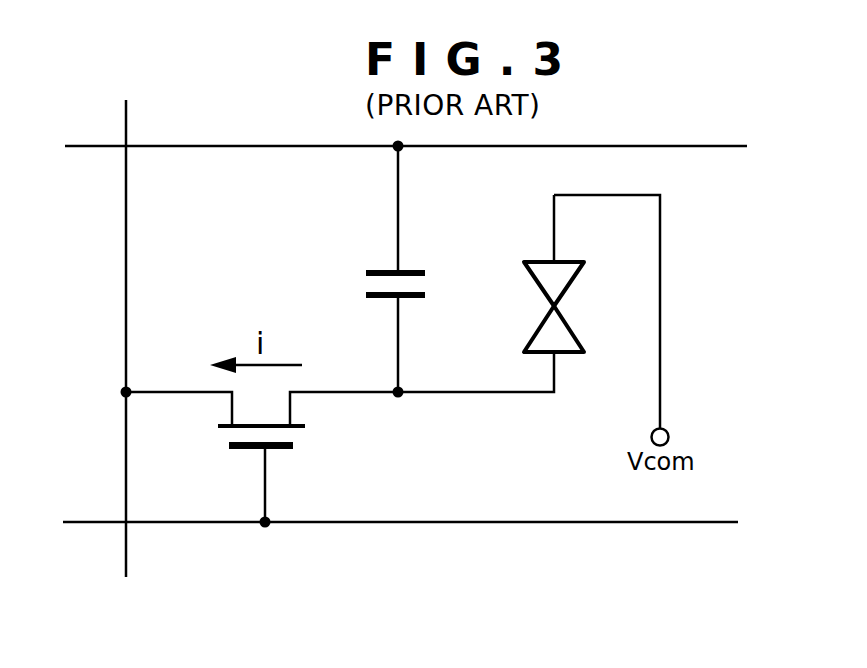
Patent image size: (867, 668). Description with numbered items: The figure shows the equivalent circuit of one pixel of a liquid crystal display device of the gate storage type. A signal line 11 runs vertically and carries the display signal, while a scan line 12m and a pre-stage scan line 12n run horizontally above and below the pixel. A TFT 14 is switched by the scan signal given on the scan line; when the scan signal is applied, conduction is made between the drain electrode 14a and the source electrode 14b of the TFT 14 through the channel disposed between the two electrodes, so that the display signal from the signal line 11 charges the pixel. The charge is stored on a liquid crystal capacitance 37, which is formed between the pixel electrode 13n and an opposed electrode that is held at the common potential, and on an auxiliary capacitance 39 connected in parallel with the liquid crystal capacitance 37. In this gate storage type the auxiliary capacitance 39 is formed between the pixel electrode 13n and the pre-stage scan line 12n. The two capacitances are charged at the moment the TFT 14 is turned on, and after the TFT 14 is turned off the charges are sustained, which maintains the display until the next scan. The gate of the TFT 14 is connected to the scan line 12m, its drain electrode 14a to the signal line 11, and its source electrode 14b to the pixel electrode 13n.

The signal line 11 is at (126, 119).
The scan line 12m is at (715, 146).
The pre-stage scan line 12n is at (697, 522).
The auxiliary capacitance 39 is at (378, 269).
The TFT 14 is at (288, 448).
The drain electrode 14a is at (232, 414).
The source electrode 14b is at (292, 410).
The liquid crystal capacitance 37 is at (562, 313).
The pixel electrode 13n is at (558, 355).